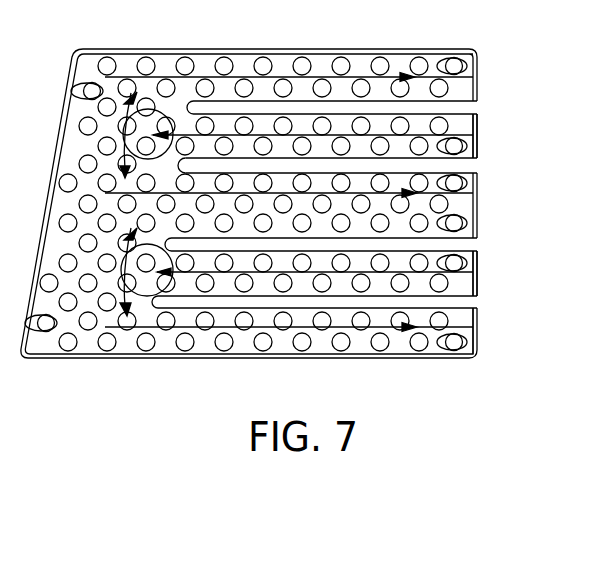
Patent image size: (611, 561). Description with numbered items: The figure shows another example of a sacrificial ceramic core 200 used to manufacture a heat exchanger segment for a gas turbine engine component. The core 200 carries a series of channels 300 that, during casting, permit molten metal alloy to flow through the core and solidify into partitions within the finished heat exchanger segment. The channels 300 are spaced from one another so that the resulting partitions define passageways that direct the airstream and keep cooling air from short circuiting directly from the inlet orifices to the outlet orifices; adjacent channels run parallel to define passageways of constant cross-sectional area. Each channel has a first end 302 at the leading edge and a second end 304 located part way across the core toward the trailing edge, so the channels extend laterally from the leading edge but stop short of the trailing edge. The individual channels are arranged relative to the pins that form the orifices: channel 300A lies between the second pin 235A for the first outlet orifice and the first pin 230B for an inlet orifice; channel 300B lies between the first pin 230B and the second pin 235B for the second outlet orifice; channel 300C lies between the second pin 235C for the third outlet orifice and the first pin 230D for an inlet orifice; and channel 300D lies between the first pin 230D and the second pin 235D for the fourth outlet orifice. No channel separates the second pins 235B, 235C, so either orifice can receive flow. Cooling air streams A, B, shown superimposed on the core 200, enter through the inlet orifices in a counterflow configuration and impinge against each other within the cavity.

The sacrificial ceramic core 200 is at (226, 50).
The channels 300 is at (365, 169).
The channel 300D is at (463, 108).
The channel 300C is at (358, 100).
The channel 300B is at (472, 246).
The channel 300A is at (473, 302).
The first end 302 is at (450, 166).
The second end 304 is at (197, 162).
The first pin 230D is at (473, 140).
The first pin 230B is at (480, 265).
The second pin 235D is at (463, 62).
The second pin 235C is at (462, 187).
The second pin 235B is at (462, 226).
The second pin 235A is at (462, 345).
The cooling air stream A is at (145, 328).
The cooling air stream B is at (240, 273).